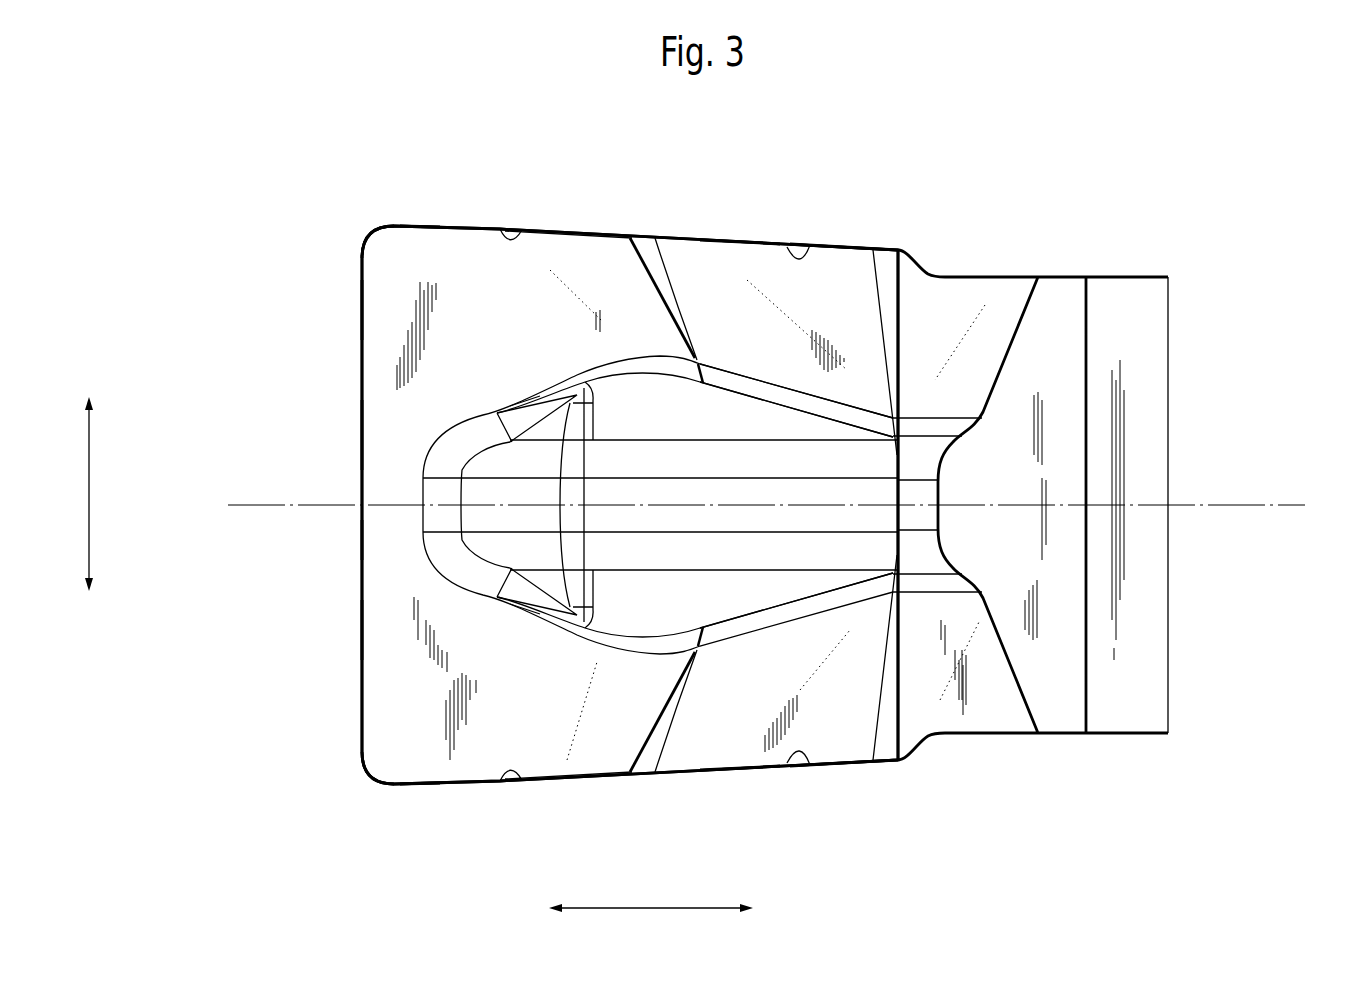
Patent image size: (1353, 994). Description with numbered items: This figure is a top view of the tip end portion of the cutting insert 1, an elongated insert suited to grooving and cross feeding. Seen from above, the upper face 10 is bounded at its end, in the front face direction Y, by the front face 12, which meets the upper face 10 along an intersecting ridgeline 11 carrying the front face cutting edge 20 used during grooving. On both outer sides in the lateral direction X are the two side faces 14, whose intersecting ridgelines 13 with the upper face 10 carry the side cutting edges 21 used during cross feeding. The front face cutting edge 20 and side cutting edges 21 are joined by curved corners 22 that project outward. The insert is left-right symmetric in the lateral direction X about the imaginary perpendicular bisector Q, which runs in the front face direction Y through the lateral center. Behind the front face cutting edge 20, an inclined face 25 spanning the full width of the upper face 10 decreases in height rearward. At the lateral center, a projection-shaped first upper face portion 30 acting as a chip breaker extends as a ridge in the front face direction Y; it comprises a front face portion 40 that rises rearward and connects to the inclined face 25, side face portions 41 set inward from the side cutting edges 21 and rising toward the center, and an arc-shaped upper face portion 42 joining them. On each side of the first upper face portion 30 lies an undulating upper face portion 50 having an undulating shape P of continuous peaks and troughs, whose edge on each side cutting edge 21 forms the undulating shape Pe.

The cutting insert 1 is at (948, 185).
The upper face 10 is at (472, 310).
The intersecting ridgeline 11 is at (362, 437).
The front face 12 is at (362, 627).
The intersecting ridgelines 13 is at (810, 242).
The side faces 14 is at (737, 243).
The front face cutting edge 20 is at (362, 533).
The side cutting edge 21 is at (522, 260).
The curved corners 22 is at (377, 233).
The inclined face 25 is at (380, 327).
The first upper face portion 30 is at (750, 483).
The front face portion 40 is at (500, 543).
The side face portions 41 is at (706, 418).
The upper face portion 42 is at (785, 387).
The undulating upper face portion 50 is at (590, 262).
The undulating shape P is at (523, 403).
The undulating shape (edge portion) Pe is at (420, 227).
The imaginary perpendicular bisector Q is at (763, 507).
The lateral direction X is at (77, 494).
The front face direction Y is at (651, 893).